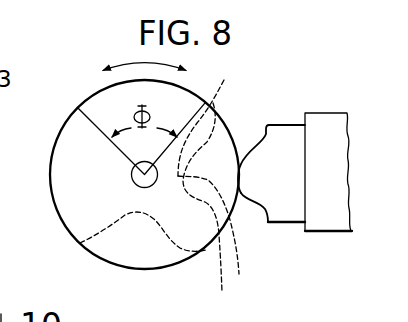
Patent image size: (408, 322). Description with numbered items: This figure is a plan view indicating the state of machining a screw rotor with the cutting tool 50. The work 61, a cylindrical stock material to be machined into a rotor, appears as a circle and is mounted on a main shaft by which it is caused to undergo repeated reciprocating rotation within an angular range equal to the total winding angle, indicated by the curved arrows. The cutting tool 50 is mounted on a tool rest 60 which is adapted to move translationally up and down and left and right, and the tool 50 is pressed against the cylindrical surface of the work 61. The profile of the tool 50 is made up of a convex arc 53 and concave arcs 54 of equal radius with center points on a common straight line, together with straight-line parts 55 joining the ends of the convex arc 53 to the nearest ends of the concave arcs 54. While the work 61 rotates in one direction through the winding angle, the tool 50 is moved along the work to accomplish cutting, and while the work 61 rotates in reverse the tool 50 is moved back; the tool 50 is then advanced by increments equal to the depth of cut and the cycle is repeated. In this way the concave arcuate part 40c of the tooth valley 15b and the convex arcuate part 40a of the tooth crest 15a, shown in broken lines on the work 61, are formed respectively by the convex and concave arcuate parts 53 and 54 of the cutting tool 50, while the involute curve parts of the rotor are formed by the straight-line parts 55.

The tooth crest 15a is at (215, 212).
The tooth valley 15b is at (216, 116).
The convex arcuate part 40a is at (206, 251).
The concave arcuate part 40c is at (227, 237).
The cutting tool 50 is at (292, 128).
The convex arc 53 is at (236, 182).
The concave arcs 54 is at (265, 126).
The straight-line parts 55 is at (258, 200).
The tool rest 60 is at (332, 230).
The work 61 is at (68, 224).